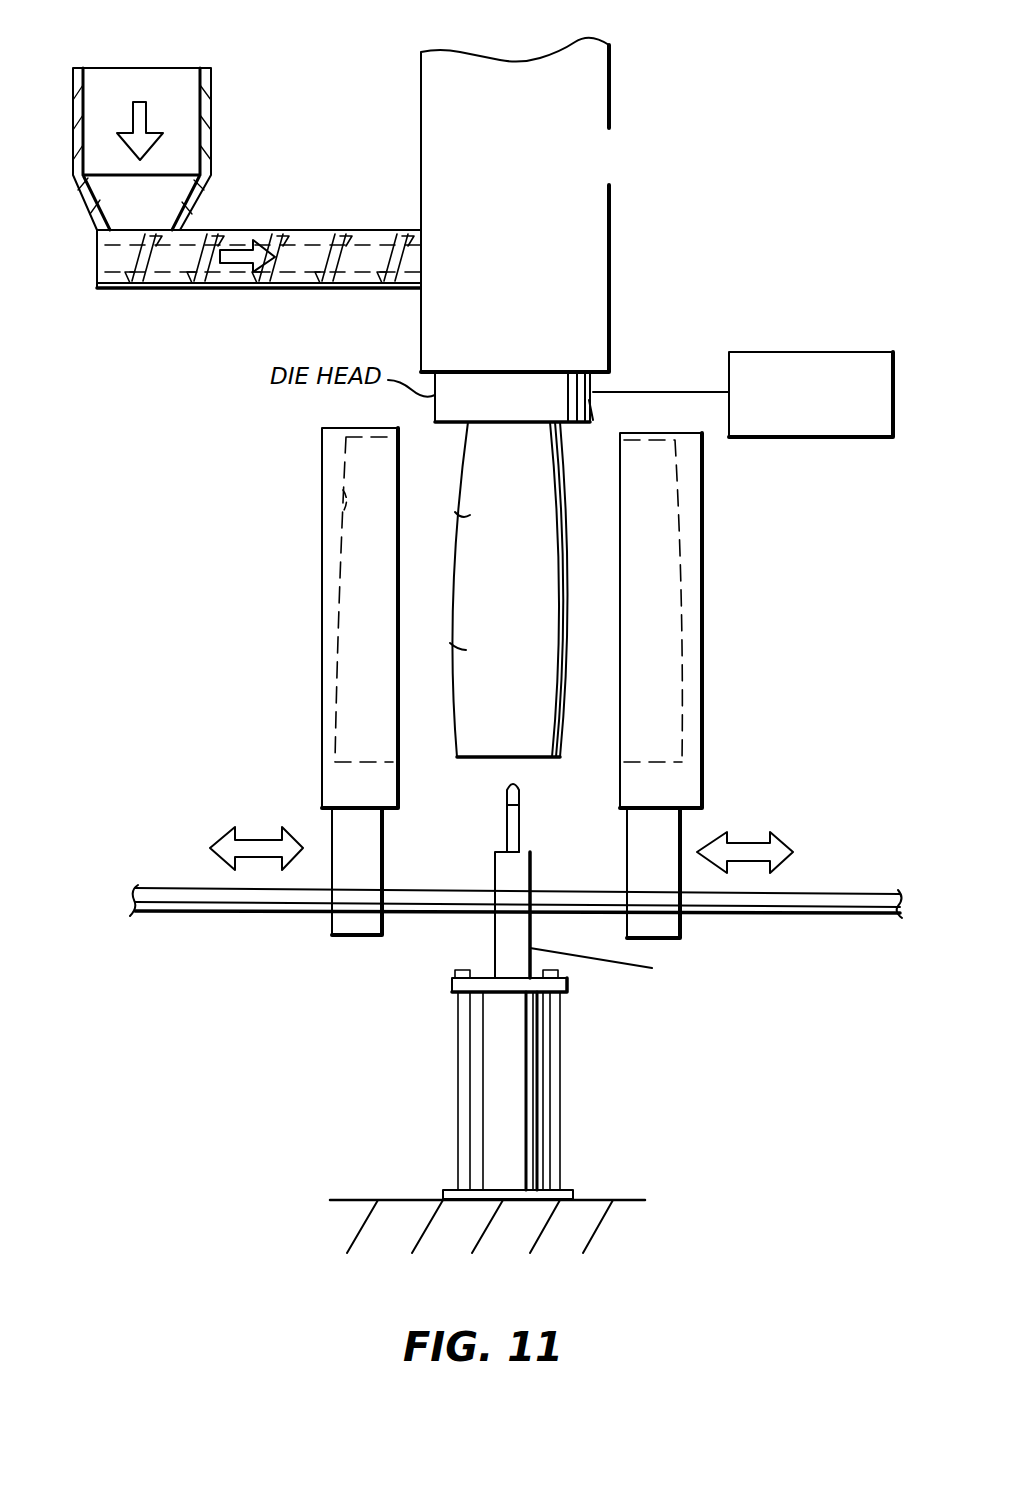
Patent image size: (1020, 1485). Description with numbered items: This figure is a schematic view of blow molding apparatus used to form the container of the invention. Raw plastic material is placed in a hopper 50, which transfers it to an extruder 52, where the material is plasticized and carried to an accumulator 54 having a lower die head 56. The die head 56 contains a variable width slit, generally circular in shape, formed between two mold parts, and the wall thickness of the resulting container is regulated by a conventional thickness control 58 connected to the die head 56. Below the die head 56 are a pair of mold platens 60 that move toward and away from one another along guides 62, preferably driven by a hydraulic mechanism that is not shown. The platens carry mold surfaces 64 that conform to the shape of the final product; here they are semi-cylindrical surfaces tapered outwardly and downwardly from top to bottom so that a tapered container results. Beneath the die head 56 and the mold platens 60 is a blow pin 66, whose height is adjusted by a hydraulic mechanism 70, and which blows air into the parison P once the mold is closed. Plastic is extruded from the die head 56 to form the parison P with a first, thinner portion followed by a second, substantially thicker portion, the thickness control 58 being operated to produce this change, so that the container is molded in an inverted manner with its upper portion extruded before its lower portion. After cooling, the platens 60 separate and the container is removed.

The hopper 50 is at (211, 128).
The extruder 52 is at (270, 232).
The accumulator 54 is at (421, 205).
The die head 56 is at (589, 400).
The thickness control 58 is at (770, 352).
The mold platens 60 is at (501, 683).
The guides 62 is at (178, 913).
The mold surfaces 64 is at (340, 507).
The blow pin 66 is at (505, 792).
The hydraulic mechanism 70 is at (495, 1075).
The parison P is at (572, 650).